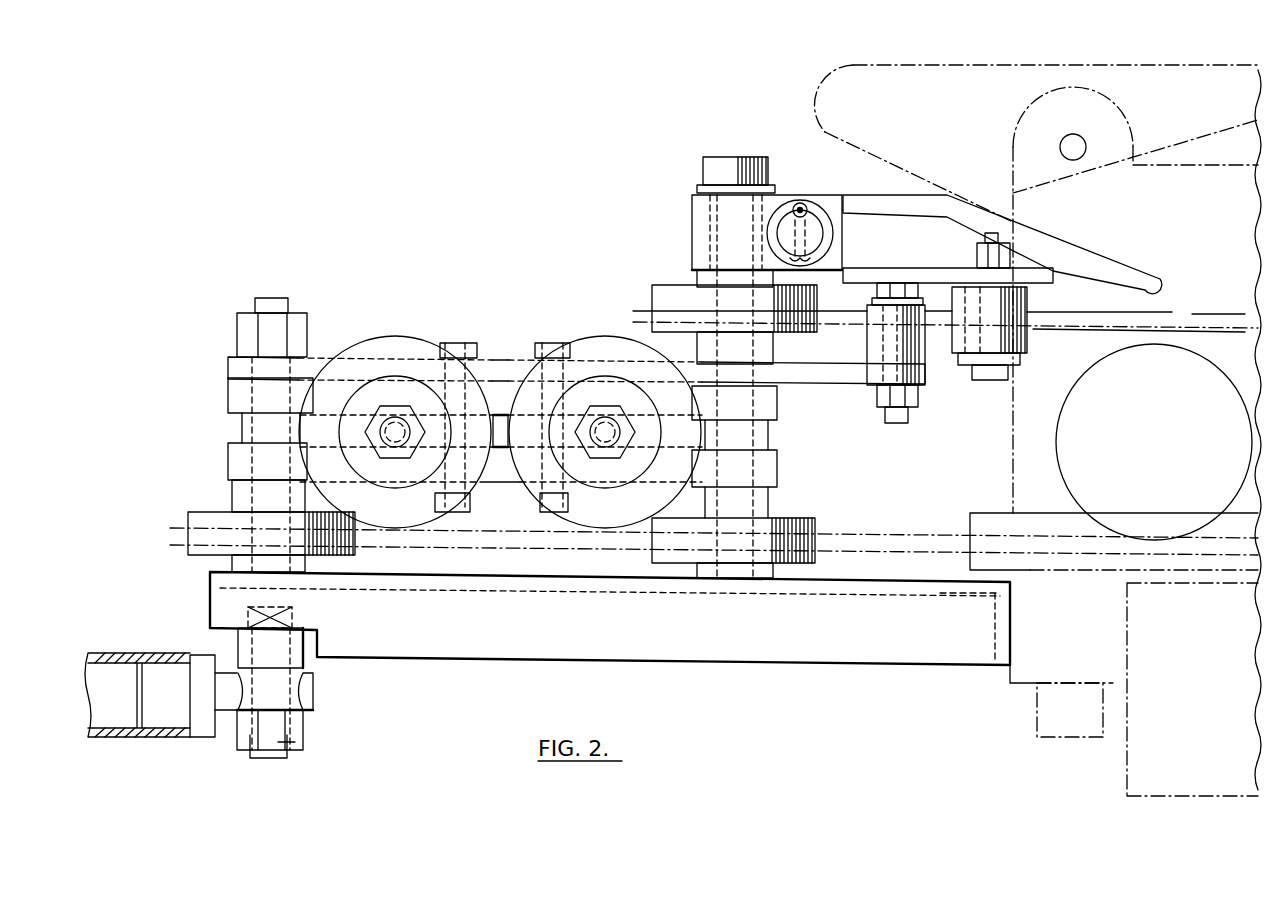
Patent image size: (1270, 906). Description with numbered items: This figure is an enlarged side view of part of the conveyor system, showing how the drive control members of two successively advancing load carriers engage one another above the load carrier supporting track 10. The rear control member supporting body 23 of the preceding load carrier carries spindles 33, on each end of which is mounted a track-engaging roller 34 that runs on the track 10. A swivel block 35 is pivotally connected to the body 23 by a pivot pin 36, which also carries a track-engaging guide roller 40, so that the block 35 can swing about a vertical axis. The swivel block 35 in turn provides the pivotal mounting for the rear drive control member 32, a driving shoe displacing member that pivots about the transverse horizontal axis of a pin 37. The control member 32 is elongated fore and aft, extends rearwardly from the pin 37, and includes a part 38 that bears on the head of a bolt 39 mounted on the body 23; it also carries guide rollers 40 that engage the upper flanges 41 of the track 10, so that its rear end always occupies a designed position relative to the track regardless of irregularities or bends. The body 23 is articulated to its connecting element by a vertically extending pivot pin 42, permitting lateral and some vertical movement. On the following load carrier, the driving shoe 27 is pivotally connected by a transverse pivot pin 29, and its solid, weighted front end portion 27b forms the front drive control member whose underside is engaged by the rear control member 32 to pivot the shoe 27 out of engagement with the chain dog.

The load carrier supporting track 10 is at (1186, 312).
The rear control member supporting body 23 is at (725, 638).
The driving shoe 27 is at (994, 102).
The front end portion of driving shoe 27b is at (826, 104).
The transverse pivot pin 29 is at (1083, 140).
The rear drive control member 32 is at (985, 168).
The spindle 33 is at (400, 437).
The track-engaging roller 34 is at (375, 346).
The swivel block 35 is at (817, 203).
The pivot pin 36 is at (738, 222).
The pin 37 is at (785, 236).
The part of drive control member 38 is at (950, 270).
The bolt 39 is at (904, 290).
The guide roller 40 is at (807, 330).
The upper flange of trolley track 41 is at (1176, 326).
The vertically extending pivot pin 42 is at (270, 752).